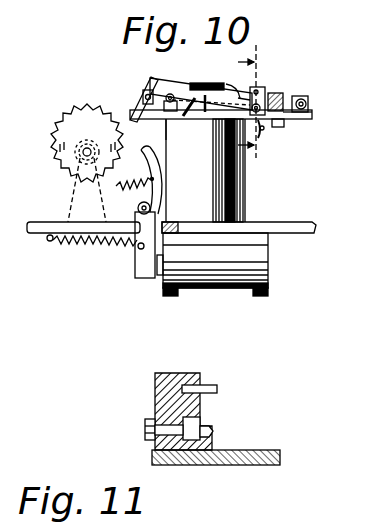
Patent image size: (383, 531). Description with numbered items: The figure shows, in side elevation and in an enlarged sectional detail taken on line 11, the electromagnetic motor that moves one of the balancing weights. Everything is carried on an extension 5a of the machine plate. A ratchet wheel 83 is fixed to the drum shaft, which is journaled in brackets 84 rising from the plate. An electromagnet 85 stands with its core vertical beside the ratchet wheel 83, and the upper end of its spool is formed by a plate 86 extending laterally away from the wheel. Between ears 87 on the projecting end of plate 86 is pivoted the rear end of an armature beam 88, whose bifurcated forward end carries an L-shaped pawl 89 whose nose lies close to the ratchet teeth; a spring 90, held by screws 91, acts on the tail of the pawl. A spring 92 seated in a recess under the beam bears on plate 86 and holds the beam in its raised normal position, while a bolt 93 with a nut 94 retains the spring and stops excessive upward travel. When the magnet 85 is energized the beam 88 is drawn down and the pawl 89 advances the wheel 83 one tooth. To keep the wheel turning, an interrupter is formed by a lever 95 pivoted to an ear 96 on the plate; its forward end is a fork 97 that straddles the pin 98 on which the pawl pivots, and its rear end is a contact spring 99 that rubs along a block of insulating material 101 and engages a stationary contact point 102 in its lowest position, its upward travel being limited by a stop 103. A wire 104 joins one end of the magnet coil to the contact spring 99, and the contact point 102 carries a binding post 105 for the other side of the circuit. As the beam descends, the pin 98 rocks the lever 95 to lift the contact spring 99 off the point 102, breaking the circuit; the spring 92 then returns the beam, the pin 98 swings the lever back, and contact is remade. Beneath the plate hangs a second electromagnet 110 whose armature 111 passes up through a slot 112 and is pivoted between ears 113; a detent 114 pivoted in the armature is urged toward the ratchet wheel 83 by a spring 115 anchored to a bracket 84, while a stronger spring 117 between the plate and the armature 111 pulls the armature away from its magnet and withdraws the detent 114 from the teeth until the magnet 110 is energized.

In FIG. 10, the extension of the plate 5a is at (303, 224).
In FIG. 10, the section line 11 is at (258, 109).
In FIG. 10, the ratchet wheel 83 is at (87, 143).
In FIG. 10, the brackets 84 is at (70, 204).
In FIG. 10, the electromagnet 85 is at (241, 195).
In FIG. 10, the plate 86 is at (210, 140).
In FIG. 11, the plate 86 is at (276, 444).
In FIG. 10, the ears 87 is at (310, 114).
In FIG. 10, the armature beam 88 is at (200, 85).
In FIG. 10, the L-shaped pawl 89 is at (162, 82).
In FIG. 10, the spring 90 is at (206, 83).
In FIG. 10, the screws 91 is at (236, 92).
In FIG. 10, the spring 92 is at (284, 120).
In FIG. 10, the bolt 93 is at (306, 102).
In FIG. 10, the nut 94 is at (262, 122).
In FIG. 10, the lever 95 is at (152, 90).
In FIG. 10, the ear 96 is at (166, 124).
In FIG. 10, the fork 97 is at (168, 104).
In FIG. 10, the pin 98 is at (143, 94).
In FIG. 10, the contact spring 99 is at (242, 98).
In FIG. 11, the contact spring 99 is at (213, 430).
In FIG. 10, the block of insulating material 101 is at (280, 100).
In FIG. 11, the block of insulating material 101 is at (170, 373).
In FIG. 11, the stationary contact point 102 is at (195, 422).
In FIG. 10, the stop 103 is at (262, 92).
In FIG. 11, the stop 103 is at (212, 385).
In FIG. 10, the wire 104 is at (205, 112).
In FIG. 10, the binding post 105 is at (262, 122).
In FIG. 11, the binding post 105 is at (146, 422).
In FIG. 10, the electromagnet 110 is at (250, 255).
In FIG. 10, the armature 111 is at (140, 265).
In FIG. 10, the slot 112 is at (168, 222).
In FIG. 10, the ears 113 is at (150, 208).
In FIG. 10, the detent 114 is at (156, 170).
In FIG. 10, the spring 115 is at (104, 200).
In FIG. 10, the spring 117 is at (92, 246).